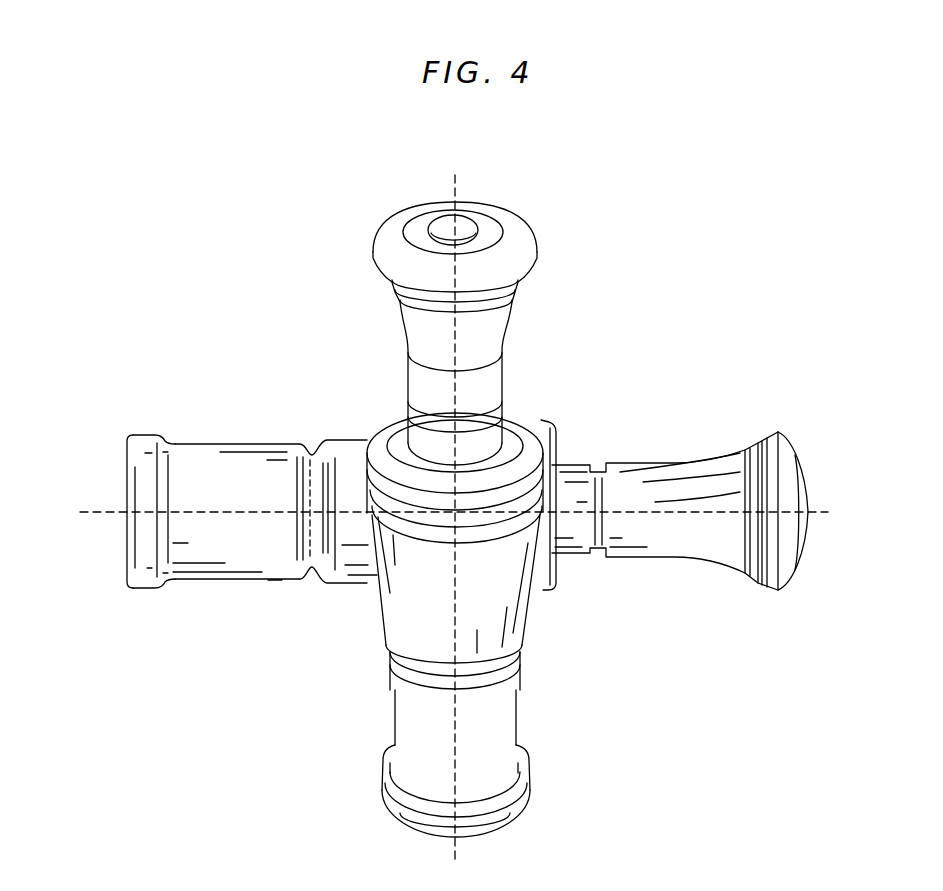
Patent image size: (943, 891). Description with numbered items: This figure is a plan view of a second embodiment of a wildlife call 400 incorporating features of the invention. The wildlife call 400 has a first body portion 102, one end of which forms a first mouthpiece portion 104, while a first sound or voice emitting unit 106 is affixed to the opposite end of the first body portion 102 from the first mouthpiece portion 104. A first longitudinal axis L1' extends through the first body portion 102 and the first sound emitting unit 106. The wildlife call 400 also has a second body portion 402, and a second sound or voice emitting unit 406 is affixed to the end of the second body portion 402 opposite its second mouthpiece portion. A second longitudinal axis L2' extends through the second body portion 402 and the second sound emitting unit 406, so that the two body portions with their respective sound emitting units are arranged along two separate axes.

The wildlife call 400 is at (434, 533).
The first body portion 102 is at (481, 538).
The first mouthpiece portion 104 is at (437, 760).
The sound or voice emitting unit 106 is at (471, 333).
The second body portion 402 is at (252, 490).
The second sound or voice emitting unit 406 is at (680, 501).
The first longitudinal axis L1' is at (480, 533).
The second longitudinal axis L2' is at (434, 491).